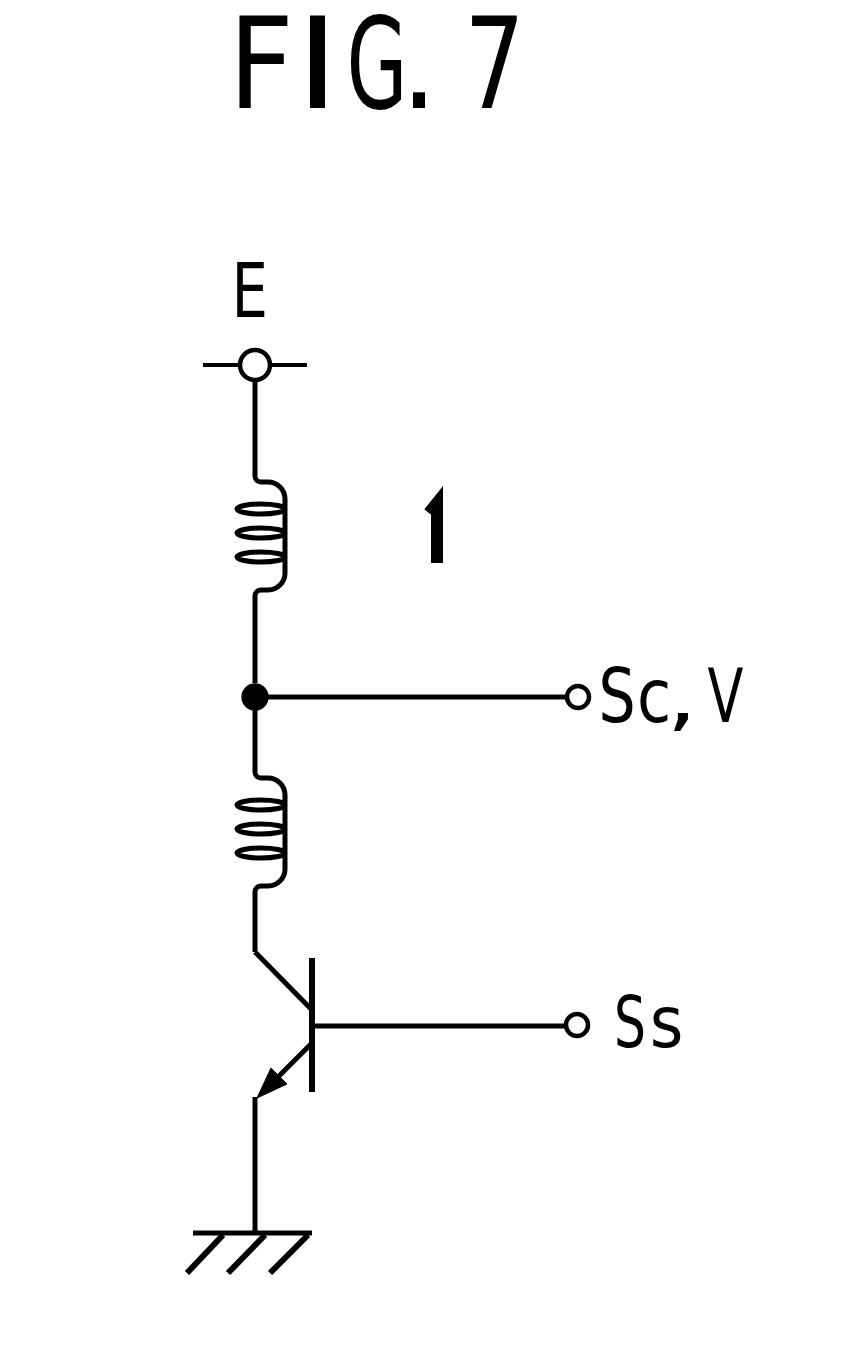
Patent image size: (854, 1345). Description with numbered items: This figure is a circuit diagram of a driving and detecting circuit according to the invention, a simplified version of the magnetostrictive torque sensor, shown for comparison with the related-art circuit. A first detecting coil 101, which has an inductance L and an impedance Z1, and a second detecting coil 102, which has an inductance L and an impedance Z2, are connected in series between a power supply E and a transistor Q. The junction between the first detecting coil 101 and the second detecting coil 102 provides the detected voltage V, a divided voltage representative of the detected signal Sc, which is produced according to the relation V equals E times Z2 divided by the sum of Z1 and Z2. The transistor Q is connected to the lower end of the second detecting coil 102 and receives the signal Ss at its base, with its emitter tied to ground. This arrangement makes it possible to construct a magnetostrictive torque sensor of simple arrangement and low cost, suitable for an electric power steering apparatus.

The first detecting coil 101 is at (215, 530).
The second detecting coil 102 is at (61, 815).
The transistor Q is at (323, 978).